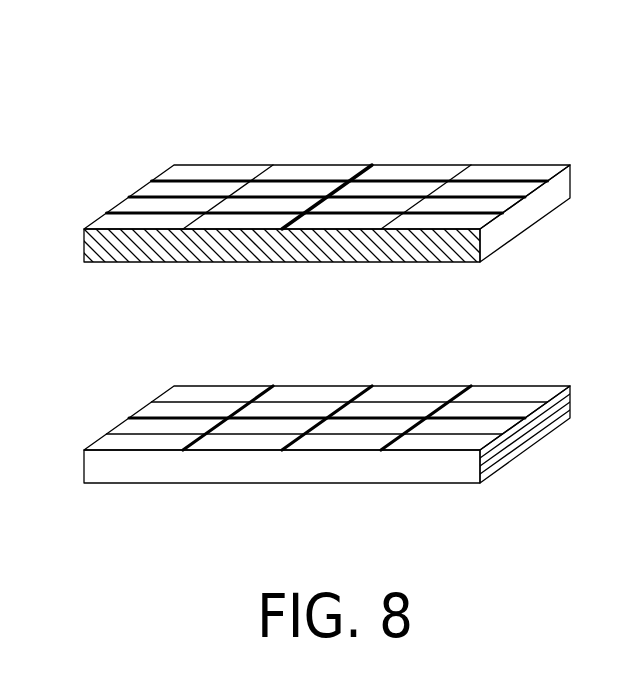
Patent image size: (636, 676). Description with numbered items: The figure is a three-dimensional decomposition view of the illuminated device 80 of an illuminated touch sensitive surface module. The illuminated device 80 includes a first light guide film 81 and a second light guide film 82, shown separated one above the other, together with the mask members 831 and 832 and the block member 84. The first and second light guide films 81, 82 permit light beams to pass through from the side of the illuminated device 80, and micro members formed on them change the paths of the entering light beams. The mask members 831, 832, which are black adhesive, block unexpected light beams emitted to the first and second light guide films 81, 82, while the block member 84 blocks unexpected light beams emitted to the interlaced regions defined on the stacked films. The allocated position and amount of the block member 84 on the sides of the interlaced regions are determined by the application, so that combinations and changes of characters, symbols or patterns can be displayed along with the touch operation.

The illuminated device 80 is at (130, 53).
The first light guide film 81 is at (313, 164).
The second light guide film 82 is at (346, 385).
The block member 84 is at (382, 168).
The mask member 831 is at (90, 235).
The mask member 832 is at (532, 440).